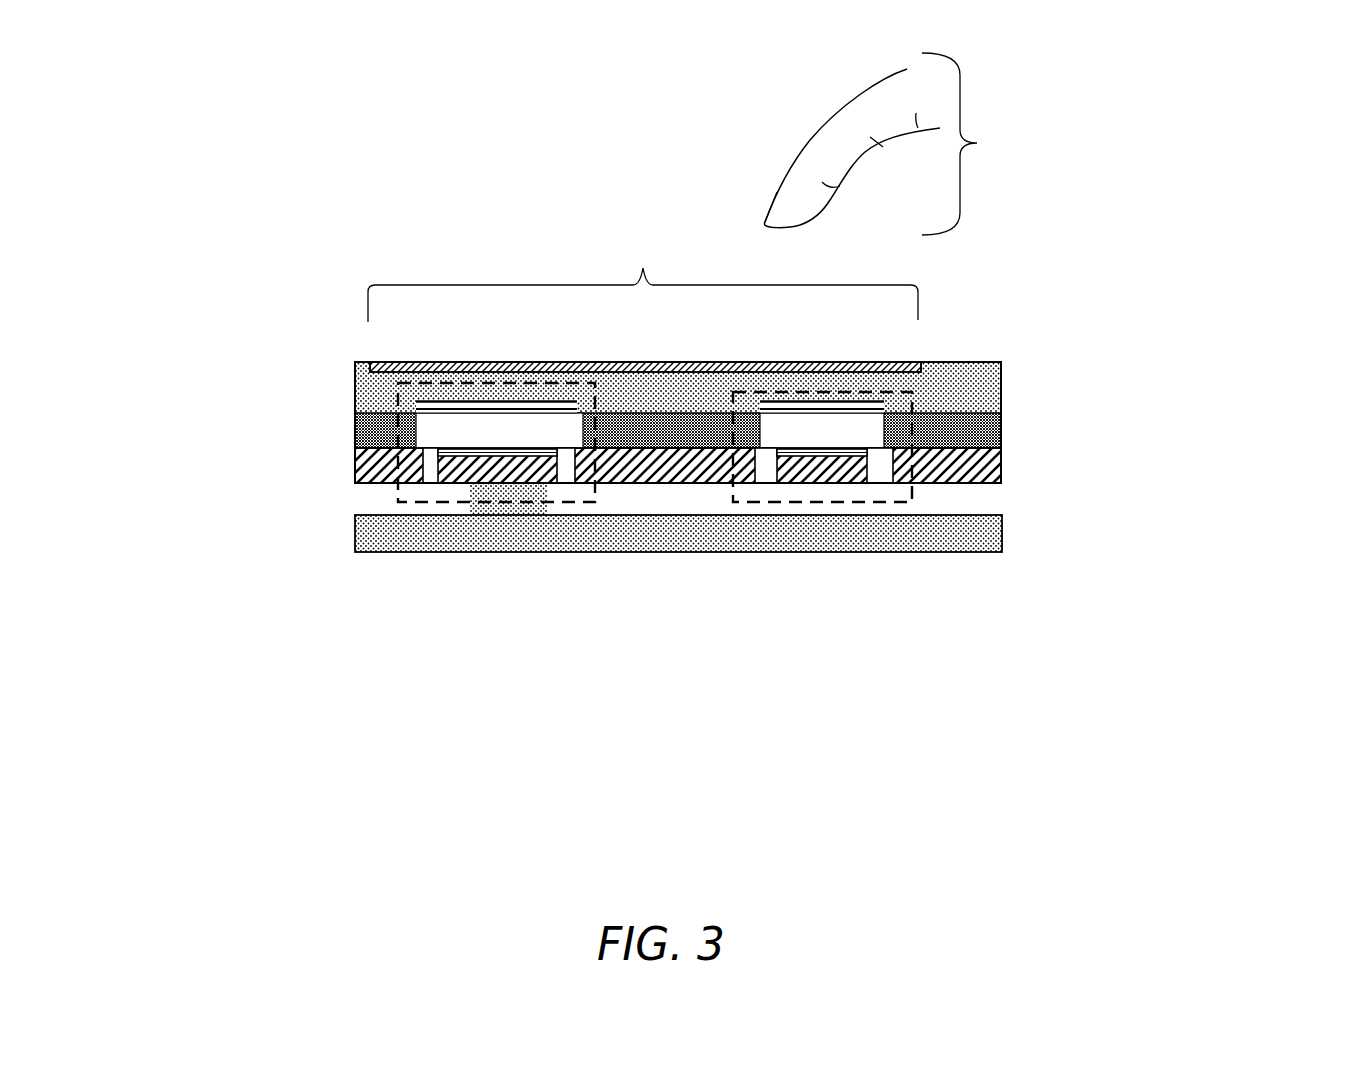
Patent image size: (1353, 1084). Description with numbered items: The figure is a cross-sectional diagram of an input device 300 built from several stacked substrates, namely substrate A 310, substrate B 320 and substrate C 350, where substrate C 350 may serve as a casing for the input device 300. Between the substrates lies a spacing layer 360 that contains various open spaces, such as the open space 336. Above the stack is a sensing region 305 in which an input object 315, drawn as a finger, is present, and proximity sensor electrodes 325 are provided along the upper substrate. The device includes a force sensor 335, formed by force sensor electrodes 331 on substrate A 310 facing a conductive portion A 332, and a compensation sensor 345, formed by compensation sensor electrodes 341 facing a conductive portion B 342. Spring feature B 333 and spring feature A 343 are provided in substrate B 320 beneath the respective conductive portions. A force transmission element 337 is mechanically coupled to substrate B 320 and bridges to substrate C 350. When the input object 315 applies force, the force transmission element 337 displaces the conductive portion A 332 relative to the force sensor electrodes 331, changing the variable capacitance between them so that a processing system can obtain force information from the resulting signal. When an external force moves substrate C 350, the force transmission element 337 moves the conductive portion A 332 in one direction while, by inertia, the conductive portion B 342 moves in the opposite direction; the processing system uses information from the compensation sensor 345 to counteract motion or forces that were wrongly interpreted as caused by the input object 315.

The input device 300 is at (222, 168).
The sensing region 305 is at (643, 265).
The substrate A 310 is at (355, 390).
The input object 315 is at (935, 144).
The substrate B 320 is at (1003, 458).
The proximity sensor electrodes 325 is at (823, 357).
The force sensor electrodes 331 is at (470, 398).
The conductive portion A 332 is at (527, 458).
The spring feature B 333 is at (557, 484).
The force sensor 335 is at (392, 423).
The open space 336 is at (430, 428).
The force transmission element 337 is at (468, 486).
The compensation sensor electrodes 341 is at (884, 400).
The conductive portion B 342 is at (807, 457).
The spring feature A 343 is at (880, 484).
The compensation sensor 345 is at (913, 494).
The substrate C 350 is at (937, 553).
The spacing layer 360 is at (1001, 422).